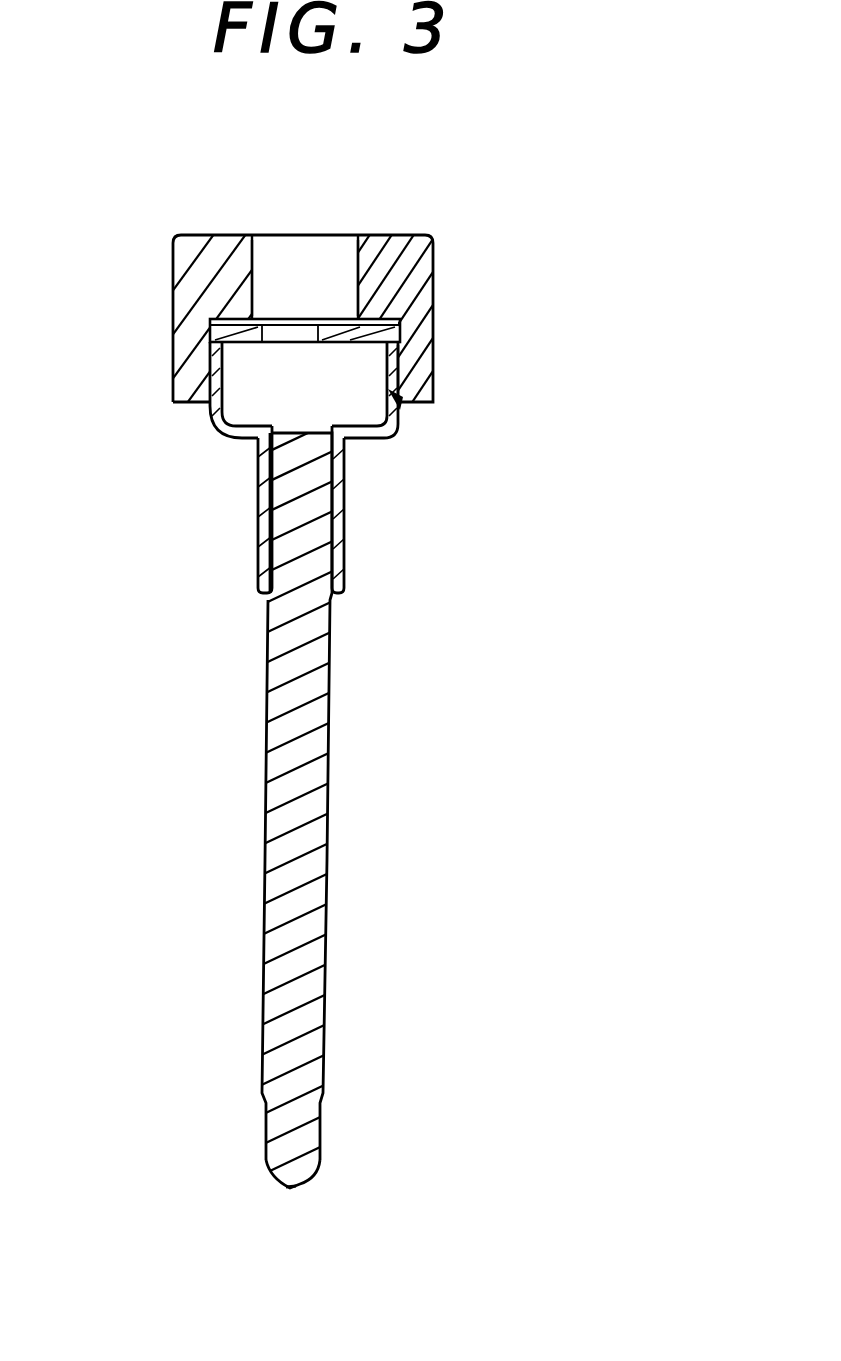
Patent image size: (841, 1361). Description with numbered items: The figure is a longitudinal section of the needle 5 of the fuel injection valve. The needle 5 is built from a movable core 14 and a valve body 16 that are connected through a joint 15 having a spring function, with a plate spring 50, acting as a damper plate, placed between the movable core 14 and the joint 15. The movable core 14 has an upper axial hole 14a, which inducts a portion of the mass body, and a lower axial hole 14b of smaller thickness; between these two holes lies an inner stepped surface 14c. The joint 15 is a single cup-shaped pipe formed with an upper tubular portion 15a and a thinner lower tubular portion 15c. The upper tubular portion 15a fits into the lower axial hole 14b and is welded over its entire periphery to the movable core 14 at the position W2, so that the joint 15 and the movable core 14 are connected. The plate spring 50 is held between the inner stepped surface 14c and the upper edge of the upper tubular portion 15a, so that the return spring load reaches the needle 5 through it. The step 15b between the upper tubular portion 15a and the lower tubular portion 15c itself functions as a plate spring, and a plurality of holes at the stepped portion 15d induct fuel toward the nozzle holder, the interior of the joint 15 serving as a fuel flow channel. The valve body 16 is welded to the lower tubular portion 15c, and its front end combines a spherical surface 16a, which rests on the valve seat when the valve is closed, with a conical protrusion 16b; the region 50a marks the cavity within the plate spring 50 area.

The needle 5 is at (288, 806).
The movable core 14 is at (422, 293).
The upper axial hole 14a is at (353, 268).
The lower axial hole 14b is at (403, 373).
The inner stepped surface 14c is at (416, 236).
The joint 15 is at (217, 443).
The upper tubular portion 15a is at (210, 383).
The step 15b is at (377, 447).
The lower tubular portion 15c is at (345, 542).
The stepped portion 15d is at (246, 442).
The valve body 16 is at (315, 835).
The spherical surface 16a is at (317, 1170).
The conical protrusion 16b is at (295, 1187).
The plate spring 50 is at (400, 332).
The plate cavity 50a is at (333, 343).
The welding position W2 is at (406, 408).